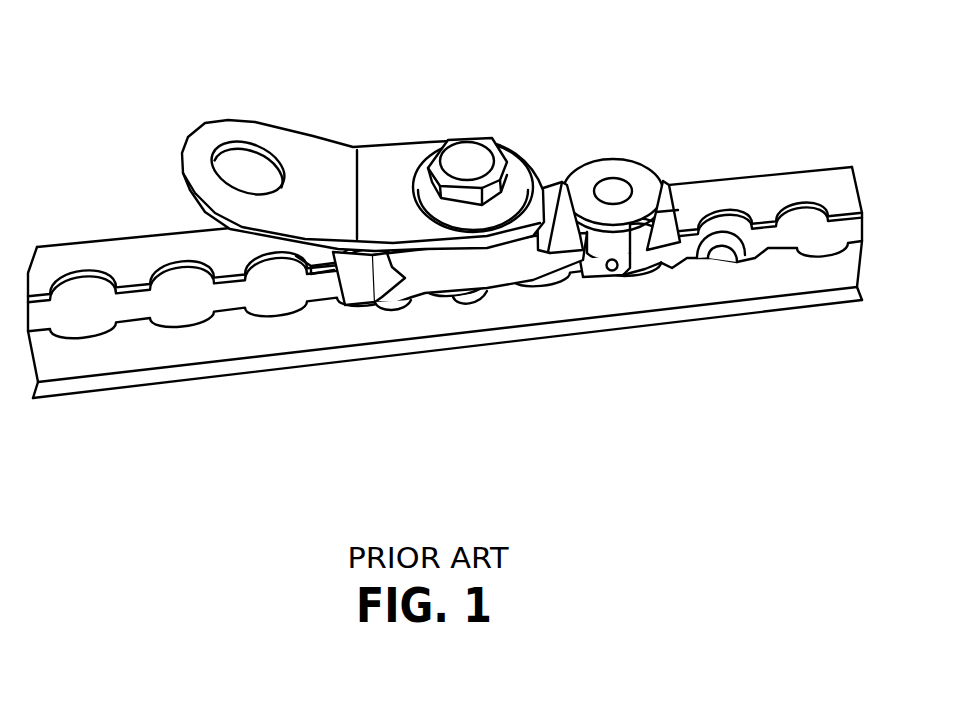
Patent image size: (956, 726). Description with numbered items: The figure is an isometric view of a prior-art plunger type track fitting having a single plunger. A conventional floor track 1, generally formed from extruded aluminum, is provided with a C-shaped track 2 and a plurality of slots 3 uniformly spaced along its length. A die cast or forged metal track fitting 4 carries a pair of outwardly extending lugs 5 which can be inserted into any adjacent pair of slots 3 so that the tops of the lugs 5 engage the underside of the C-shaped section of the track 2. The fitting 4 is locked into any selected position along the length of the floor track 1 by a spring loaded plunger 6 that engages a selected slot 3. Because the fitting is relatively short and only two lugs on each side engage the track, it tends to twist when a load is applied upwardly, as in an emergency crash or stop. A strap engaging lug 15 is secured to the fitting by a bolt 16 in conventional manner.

The floor track 1 is at (445, 291).
The C-shaped track 2 is at (45, 313).
The slots 3 is at (173, 267).
The track fitting 4 is at (522, 267).
The lugs 5 is at (482, 300).
The spring loaded plunger 6 is at (613, 188).
The strap engaging lug 15 is at (307, 153).
The bolt 16 is at (467, 157).